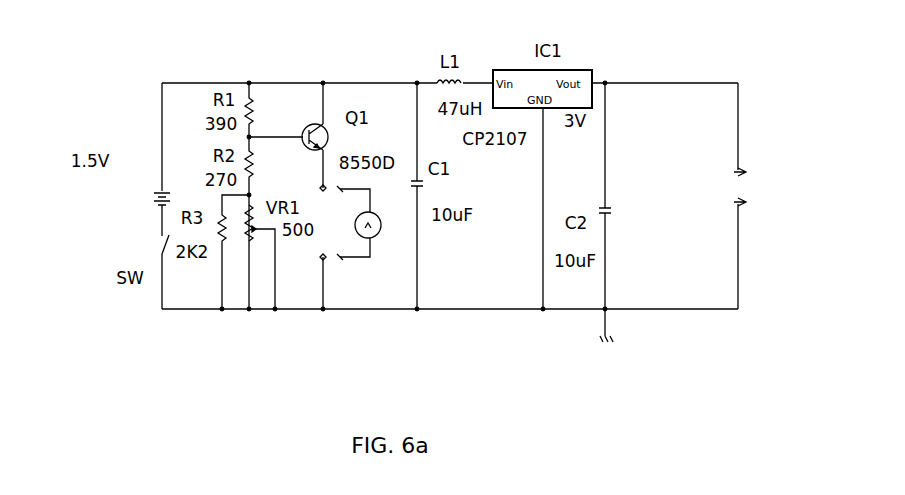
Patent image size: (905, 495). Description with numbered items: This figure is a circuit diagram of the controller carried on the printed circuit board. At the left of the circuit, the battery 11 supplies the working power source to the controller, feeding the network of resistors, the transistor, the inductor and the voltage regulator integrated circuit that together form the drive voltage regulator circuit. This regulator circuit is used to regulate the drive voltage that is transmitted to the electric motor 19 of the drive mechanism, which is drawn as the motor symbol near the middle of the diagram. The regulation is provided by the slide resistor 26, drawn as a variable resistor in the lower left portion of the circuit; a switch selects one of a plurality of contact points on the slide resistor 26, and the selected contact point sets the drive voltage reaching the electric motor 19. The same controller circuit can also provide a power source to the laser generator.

The battery 11 is at (161, 192).
The electric motor 19 is at (371, 208).
The slide resistor 26 is at (265, 229).